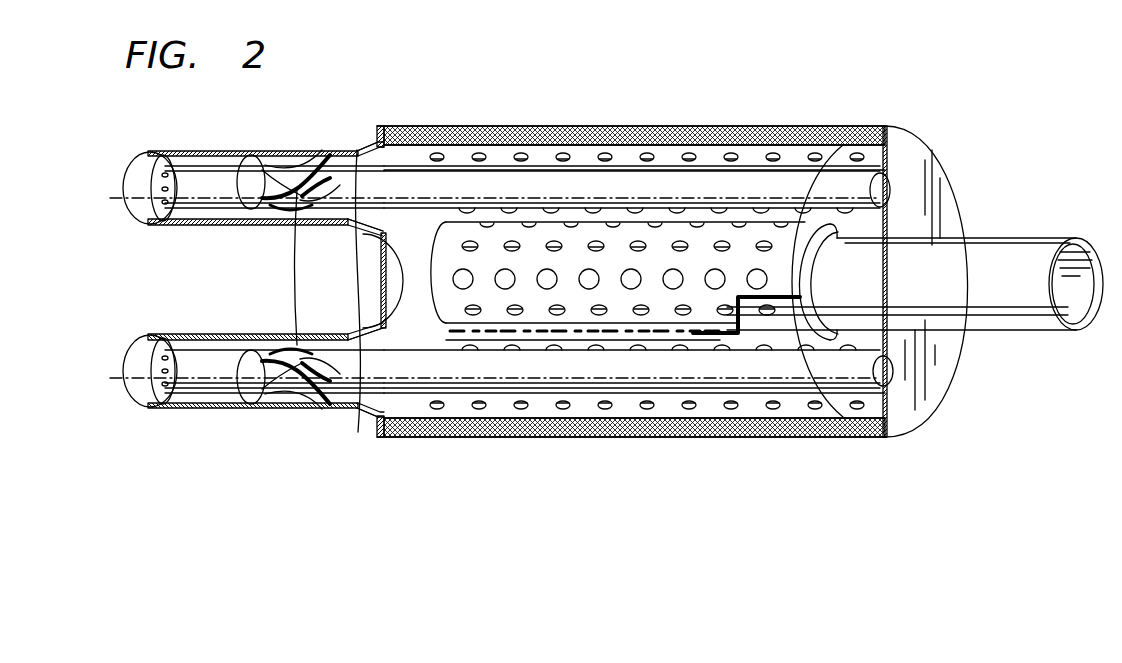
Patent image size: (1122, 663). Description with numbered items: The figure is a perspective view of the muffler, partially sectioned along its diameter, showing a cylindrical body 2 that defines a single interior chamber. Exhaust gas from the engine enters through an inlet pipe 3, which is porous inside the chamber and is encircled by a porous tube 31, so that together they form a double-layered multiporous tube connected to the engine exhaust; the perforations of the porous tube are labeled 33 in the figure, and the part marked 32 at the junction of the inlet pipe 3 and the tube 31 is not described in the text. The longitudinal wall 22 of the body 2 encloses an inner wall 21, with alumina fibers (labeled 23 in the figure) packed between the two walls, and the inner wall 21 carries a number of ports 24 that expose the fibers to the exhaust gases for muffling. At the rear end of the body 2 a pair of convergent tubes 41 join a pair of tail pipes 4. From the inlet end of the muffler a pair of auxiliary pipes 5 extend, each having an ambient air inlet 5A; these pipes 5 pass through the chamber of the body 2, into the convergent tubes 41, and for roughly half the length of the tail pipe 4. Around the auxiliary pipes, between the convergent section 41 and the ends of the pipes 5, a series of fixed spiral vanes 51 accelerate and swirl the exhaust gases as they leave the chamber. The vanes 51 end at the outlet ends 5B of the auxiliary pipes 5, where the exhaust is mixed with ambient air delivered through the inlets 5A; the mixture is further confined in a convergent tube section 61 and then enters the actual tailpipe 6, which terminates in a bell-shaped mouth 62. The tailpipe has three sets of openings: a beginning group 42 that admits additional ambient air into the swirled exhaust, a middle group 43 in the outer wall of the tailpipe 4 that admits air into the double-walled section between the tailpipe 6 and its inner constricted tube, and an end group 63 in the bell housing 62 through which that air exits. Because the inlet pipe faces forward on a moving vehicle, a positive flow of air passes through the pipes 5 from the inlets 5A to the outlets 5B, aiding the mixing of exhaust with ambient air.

The cylindrical body 2 is at (905, 148).
The inlet pipe 3 is at (1020, 248).
The tail pipes 4 is at (188, 226).
The auxiliary pipes 5 is at (530, 182).
The auxiliary ambient air inlet 5A is at (893, 192).
The outlet ends of auxiliary pipes 5B is at (262, 160).
The tailpipe 6 is at (213, 170).
The inner wall 21 is at (817, 156).
The longitudinal wall 22 is at (782, 128).
The sound absorbing material 23 is at (740, 136).
The ports 24 is at (703, 154).
The porous tube 31 is at (635, 232).
The connecting bracket 32 is at (760, 325).
The tube perforations 33 is at (562, 226).
The convergent tubes 41 is at (357, 150).
The beginning group of openings 42 is at (312, 152).
The middle group of openings 43 is at (185, 152).
The fixed spiral vanes 51 is at (293, 212).
The convergent tube section 61 is at (262, 215).
The bell shaped mouth 62 is at (160, 178).
The end group of openings 63 is at (162, 190).